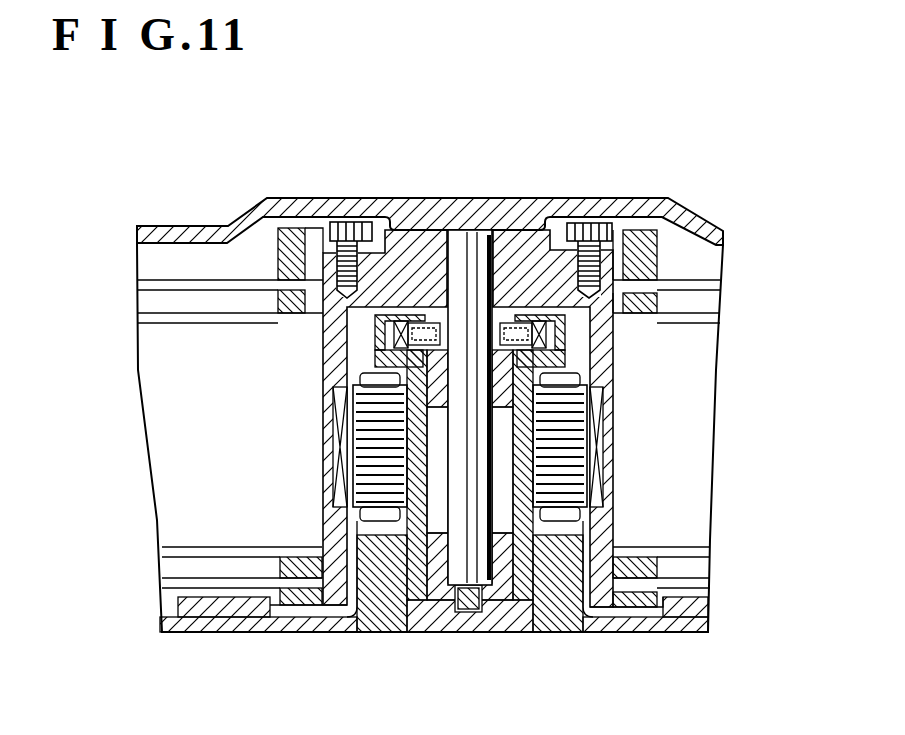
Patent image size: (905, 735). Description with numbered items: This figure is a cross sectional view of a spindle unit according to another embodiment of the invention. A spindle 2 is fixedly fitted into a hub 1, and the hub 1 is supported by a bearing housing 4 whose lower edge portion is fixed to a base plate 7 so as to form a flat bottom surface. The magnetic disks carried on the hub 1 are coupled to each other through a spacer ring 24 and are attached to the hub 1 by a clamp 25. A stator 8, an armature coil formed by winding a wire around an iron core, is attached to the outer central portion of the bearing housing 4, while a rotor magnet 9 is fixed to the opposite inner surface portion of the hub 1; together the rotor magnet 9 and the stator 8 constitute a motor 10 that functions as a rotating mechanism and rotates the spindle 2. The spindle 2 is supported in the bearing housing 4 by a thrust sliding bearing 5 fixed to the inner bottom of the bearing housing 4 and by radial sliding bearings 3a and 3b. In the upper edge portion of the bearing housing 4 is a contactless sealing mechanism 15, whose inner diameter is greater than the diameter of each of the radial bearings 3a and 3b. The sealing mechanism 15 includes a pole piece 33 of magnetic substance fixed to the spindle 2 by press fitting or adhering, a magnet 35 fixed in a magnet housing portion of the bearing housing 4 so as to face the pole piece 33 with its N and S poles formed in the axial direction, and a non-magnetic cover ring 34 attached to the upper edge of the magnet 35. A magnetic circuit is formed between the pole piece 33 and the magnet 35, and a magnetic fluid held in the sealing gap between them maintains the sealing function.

The hub 1 is at (333, 520).
The spindle 2 is at (475, 253).
The radial sliding bearing 3a is at (520, 386).
The radial sliding bearing 3b is at (503, 567).
The bearing housing 4 is at (417, 572).
The thrust sliding bearing 5 is at (468, 605).
The base plate 7 is at (267, 612).
The stator 8 is at (368, 418).
The rotor magnet 9 is at (333, 448).
The motor 10 is at (419, 447).
The contactless sealing mechanism 15 is at (461, 233).
The spacer ring 24 is at (655, 300).
The clamp 25 is at (300, 198).
The pole piece 33 is at (432, 318).
The cover ring 34 is at (406, 312).
The magnet 35 is at (381, 313).